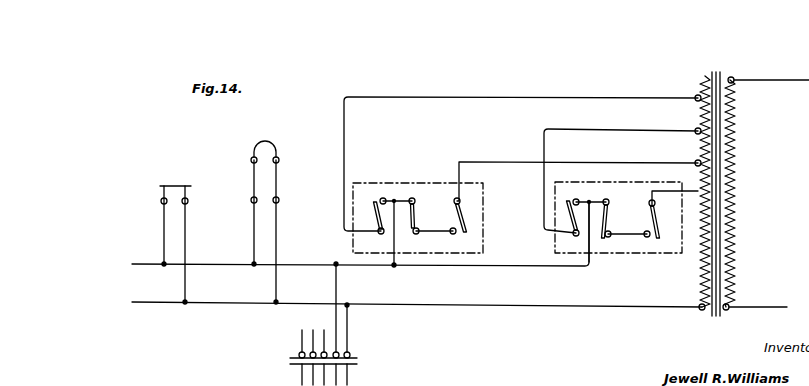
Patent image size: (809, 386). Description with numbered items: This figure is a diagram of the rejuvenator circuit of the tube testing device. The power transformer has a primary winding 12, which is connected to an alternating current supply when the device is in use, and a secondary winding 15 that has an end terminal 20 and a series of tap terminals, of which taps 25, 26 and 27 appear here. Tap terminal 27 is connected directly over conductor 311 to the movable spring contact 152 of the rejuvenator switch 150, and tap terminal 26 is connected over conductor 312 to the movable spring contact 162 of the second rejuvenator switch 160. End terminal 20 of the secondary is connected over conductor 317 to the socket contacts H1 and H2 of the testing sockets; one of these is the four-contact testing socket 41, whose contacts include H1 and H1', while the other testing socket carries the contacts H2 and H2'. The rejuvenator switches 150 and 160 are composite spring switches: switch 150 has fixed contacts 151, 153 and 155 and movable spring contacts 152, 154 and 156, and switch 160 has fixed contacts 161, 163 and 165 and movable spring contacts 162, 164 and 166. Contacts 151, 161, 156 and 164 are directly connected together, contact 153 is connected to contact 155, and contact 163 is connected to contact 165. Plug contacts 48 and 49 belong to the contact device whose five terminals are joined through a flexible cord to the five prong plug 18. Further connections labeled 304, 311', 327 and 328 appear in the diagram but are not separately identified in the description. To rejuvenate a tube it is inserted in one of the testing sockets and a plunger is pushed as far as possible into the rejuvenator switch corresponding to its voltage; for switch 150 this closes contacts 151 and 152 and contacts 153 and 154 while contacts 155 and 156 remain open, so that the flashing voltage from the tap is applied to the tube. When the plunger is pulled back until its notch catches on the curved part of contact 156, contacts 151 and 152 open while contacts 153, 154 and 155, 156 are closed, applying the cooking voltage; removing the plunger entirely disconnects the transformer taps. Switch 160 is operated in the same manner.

The primary winding 12 is at (734, 158).
The secondary winding 15 is at (702, 232).
The five prong plug 18 is at (290, 359).
The end terminal 20 is at (700, 310).
The tap terminal 25 is at (696, 161).
The tap terminal 26 is at (696, 96).
The tap terminal 27 is at (696, 129).
The testing socket 41 is at (160, 186).
The plug contact 48 is at (336, 320).
The plug contact 49 is at (347, 326).
The rejuvenator switch 150 is at (555, 206).
The fixed contact 151 is at (579, 199).
The movable spring contact 152 is at (568, 224).
The fixed contact 153 is at (647, 238).
The movable spring contact 154 is at (651, 221).
The fixed contact 155 is at (609, 238).
The movable spring contact 156 is at (608, 216).
The rejuvenator switch 160 is at (438, 183).
The fixed contact 161 is at (393, 187).
The movable spring contact 162 is at (375, 197).
The fixed contact 163 is at (418, 229).
The movable spring contact 164 is at (413, 232).
The fixed contact 165 is at (454, 234).
The movable spring contact 166 is at (466, 215).
The conductor 304 is at (695, 190).
The conductor 311 is at (621, 169).
The conductor 311' is at (577, 169).
The conductor 312 is at (523, 97).
The conductor 317 is at (490, 306).
The conductor 327 is at (303, 263).
The conductor 328 is at (164, 243).
The socket contact H1 is at (148, 226).
The socket contact H1' is at (199, 245).
The socket contact H2 is at (251, 203).
The socket contact H2' is at (291, 230).